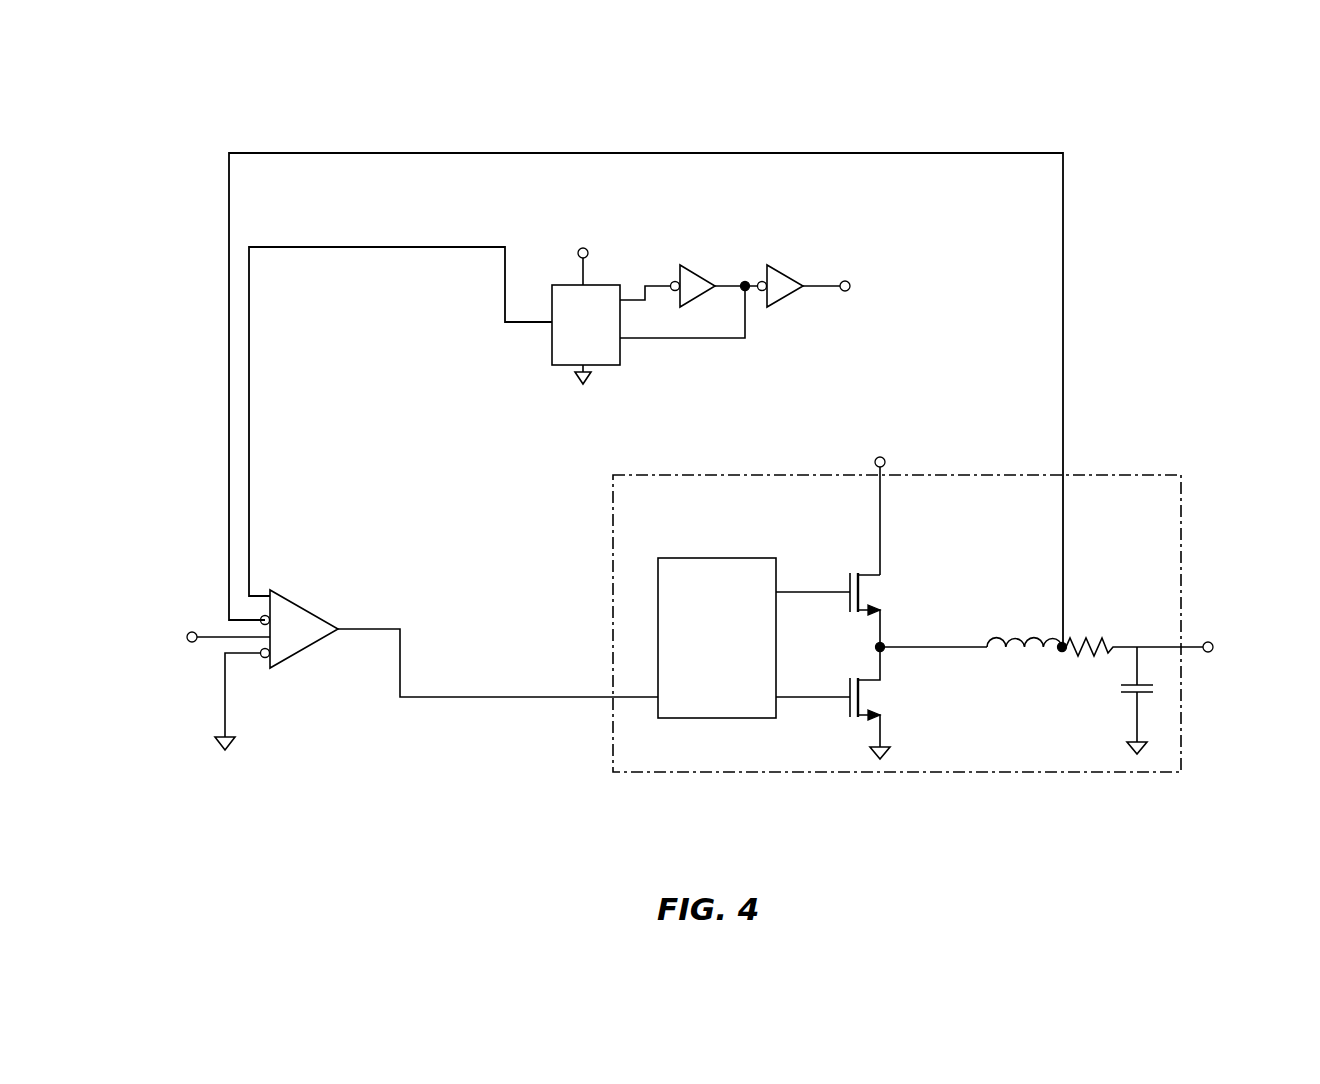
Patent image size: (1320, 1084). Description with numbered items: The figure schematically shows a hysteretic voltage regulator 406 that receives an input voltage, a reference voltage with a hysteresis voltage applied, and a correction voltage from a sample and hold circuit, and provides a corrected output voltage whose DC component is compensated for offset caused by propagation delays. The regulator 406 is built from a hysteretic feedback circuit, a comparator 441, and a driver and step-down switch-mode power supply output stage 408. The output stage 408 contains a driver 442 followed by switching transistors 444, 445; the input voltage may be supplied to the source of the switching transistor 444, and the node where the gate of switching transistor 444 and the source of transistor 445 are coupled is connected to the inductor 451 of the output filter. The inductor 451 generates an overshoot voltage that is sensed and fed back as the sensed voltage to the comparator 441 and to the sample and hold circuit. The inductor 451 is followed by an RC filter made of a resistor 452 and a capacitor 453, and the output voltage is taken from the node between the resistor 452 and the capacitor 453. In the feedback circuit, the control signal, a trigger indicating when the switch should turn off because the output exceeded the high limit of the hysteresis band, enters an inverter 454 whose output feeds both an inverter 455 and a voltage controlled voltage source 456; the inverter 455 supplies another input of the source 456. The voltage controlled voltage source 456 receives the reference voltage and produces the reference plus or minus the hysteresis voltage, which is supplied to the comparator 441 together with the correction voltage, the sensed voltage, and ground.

The hysteretic voltage regulator 406 is at (1077, 125).
The driver and step-down-switch-mode power supply output stage 408 is at (934, 772).
The comparator 441 is at (299, 606).
The driver 442 is at (665, 558).
The switching transistor 444 is at (860, 573).
The switching transistor 445 is at (858, 678).
The inductor 451 is at (1024, 628).
The resistor 452 is at (1132, 634).
The capacitor 453 is at (1105, 700).
The inverter 454 is at (804, 302).
The inverter 455 is at (690, 267).
The voltage controlled voltage source 456 is at (552, 286).